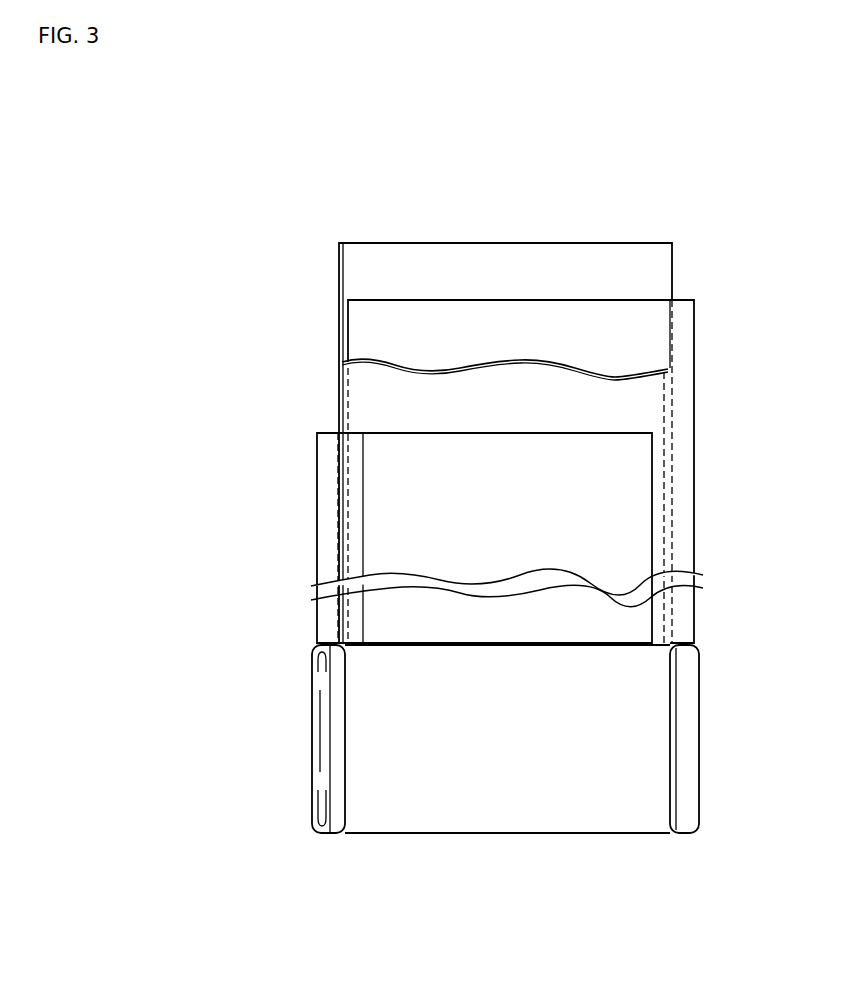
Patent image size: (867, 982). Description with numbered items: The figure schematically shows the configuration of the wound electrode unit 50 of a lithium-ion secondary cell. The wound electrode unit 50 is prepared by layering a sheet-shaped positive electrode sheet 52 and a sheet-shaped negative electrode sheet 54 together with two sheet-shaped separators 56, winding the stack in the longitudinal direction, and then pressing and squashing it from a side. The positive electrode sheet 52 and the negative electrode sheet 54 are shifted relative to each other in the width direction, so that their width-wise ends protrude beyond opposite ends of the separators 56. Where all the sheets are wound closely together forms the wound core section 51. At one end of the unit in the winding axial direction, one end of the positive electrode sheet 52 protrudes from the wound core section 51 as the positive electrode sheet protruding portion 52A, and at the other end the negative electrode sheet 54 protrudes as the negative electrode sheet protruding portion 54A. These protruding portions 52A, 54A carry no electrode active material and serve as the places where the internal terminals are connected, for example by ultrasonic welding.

The wound electrode unit 50 is at (507, 788).
The wound core section 51 is at (428, 815).
The positive electrode sheet 52 is at (316, 503).
The positive electrode sheet protruding portion 52A is at (333, 822).
The negative electrode sheet 54 is at (696, 377).
The negative electrode sheet protruding portion 54A is at (683, 822).
The separator sheet 56 is at (358, 264).